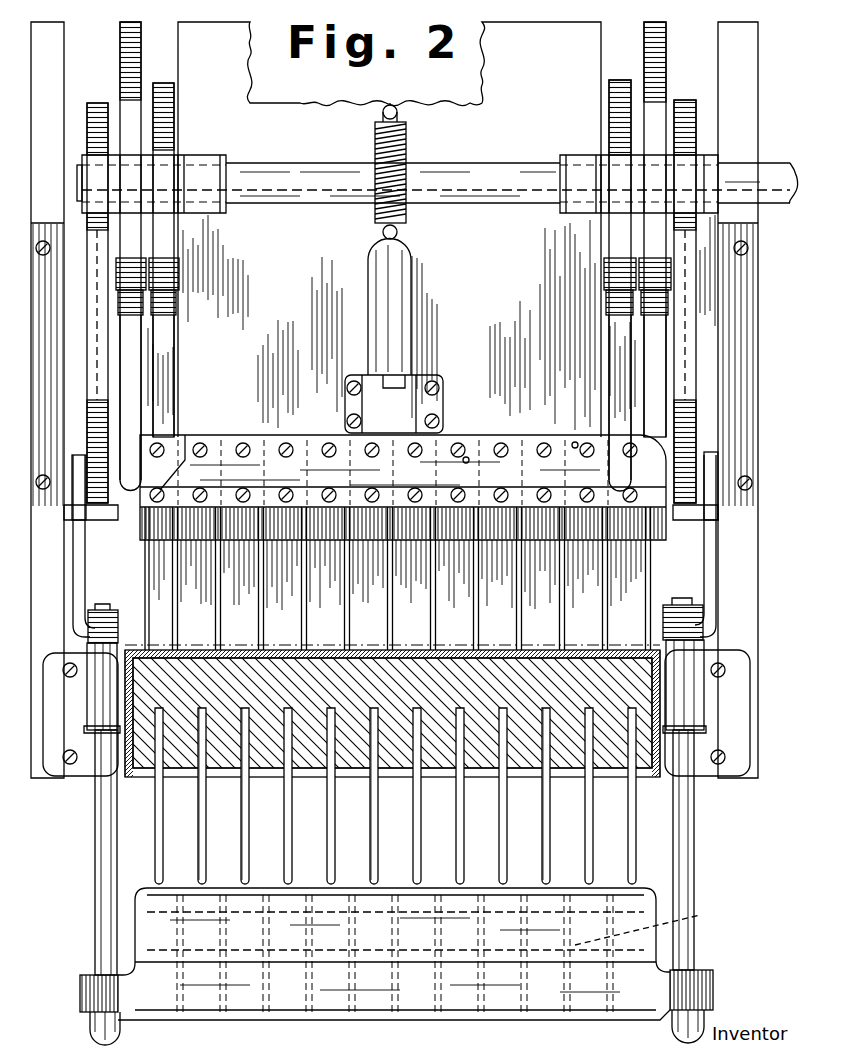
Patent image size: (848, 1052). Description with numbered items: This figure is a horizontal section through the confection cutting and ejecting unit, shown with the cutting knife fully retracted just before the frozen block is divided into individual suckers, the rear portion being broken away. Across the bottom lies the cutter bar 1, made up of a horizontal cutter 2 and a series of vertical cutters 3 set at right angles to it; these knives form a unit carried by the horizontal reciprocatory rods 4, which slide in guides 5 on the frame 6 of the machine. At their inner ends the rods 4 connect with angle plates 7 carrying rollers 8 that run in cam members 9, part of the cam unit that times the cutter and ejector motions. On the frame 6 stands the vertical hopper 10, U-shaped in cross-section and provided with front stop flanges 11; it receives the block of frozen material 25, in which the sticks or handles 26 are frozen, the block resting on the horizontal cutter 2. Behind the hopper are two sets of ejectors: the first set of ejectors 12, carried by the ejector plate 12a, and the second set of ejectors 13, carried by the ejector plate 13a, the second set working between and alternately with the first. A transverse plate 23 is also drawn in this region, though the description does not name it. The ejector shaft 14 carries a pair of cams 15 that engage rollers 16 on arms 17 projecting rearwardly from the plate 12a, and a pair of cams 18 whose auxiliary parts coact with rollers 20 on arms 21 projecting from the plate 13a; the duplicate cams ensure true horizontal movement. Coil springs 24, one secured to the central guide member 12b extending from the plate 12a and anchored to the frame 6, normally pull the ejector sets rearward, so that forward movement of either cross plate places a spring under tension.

The cutter bar 1 is at (660, 992).
The horizontal cutter 2 is at (598, 905).
The vertical cutters 3 is at (520, 950).
The horizontal reciprocatory rods 4 is at (97, 865).
The guides 5 is at (98, 663).
The frame 6 is at (752, 568).
The angle plates 7 is at (74, 565).
The rollers 8 is at (72, 500).
The cam members 9 is at (97, 103).
The vertical hopper 10 is at (380, 652).
The front stop flanges 11 is at (150, 780).
The first set of ejectors 12 is at (240, 780).
The ejector plate 12a is at (466, 458).
The central guide member 12b is at (392, 302).
The second set of ejectors 13 is at (240, 640).
The ejector plate 13a is at (575, 442).
The ejector shaft 14 is at (515, 168).
The cams 15 is at (165, 92).
The rollers 16 is at (185, 265).
The arms 17 is at (130, 337).
The cams 18 is at (128, 48).
The rollers 20 is at (180, 297).
The arms 21 is at (165, 373).
The plate 23 is at (322, 436).
The coil springs 24 is at (378, 148).
The block of frozen material 25 is at (590, 690).
The sticks or handles 26 is at (371, 860).